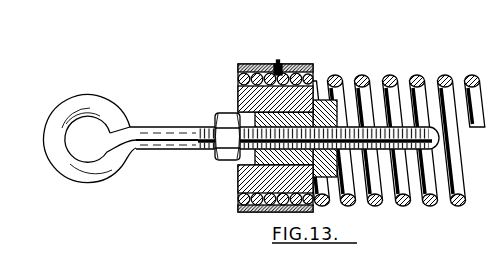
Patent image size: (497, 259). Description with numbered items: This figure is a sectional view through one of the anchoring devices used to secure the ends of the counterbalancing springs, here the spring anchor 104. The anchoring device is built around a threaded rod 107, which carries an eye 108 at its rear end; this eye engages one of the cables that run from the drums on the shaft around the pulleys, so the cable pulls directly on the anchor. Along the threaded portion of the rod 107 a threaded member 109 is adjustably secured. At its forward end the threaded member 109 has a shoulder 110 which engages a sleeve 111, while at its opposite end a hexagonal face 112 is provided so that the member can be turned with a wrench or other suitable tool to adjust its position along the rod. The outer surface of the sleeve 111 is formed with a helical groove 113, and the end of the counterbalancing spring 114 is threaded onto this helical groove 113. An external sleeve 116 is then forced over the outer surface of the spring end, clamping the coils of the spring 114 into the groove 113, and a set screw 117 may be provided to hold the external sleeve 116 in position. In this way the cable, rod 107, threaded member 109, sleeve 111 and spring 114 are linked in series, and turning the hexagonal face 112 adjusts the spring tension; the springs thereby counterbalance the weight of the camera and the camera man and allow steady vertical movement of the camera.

The spring anchor 104 is at (211, 82).
The threaded rod 107 is at (191, 150).
The eye 108 is at (72, 162).
The threaded member 109 is at (247, 171).
The shoulder 110 is at (321, 99).
The sleeve 111 is at (245, 101).
The hexagonal face 112 is at (215, 118).
The helical groove 113 is at (244, 193).
The counterbalancing spring 114 is at (424, 204).
The external sleeve 116 is at (304, 64).
The set screw 117 is at (277, 63).